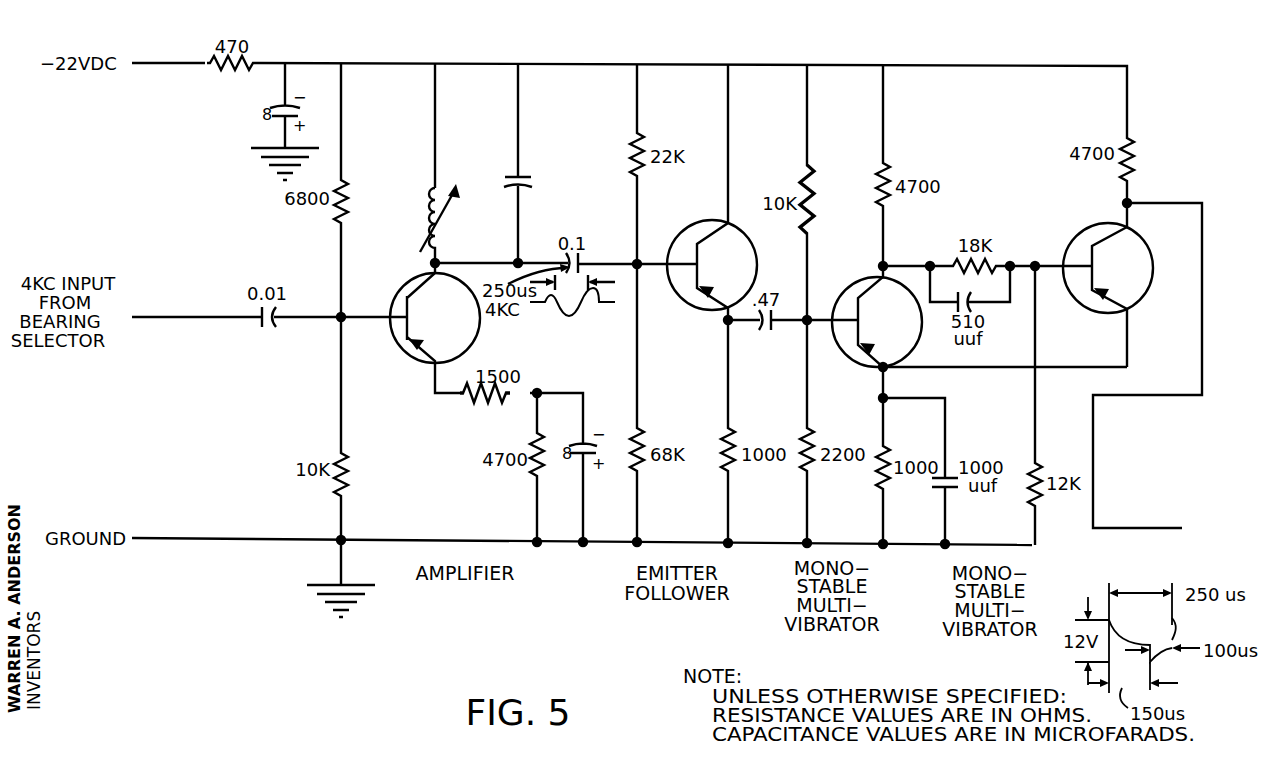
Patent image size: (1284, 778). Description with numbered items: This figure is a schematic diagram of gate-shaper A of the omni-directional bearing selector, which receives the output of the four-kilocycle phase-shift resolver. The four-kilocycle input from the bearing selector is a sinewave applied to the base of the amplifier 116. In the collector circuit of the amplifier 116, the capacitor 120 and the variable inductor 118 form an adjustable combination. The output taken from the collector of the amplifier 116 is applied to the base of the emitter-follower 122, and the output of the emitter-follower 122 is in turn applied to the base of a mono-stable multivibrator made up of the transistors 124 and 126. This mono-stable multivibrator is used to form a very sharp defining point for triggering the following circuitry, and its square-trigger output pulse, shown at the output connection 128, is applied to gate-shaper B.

The amplifier 116 is at (480, 332).
The variable inductor 118 is at (440, 242).
The capacitor 120 is at (520, 180).
The emitter-follower 122 is at (697, 225).
The transistor 124 is at (855, 283).
The transistor 126 is at (1078, 234).
The output to gate shaper B 128 is at (1122, 531).